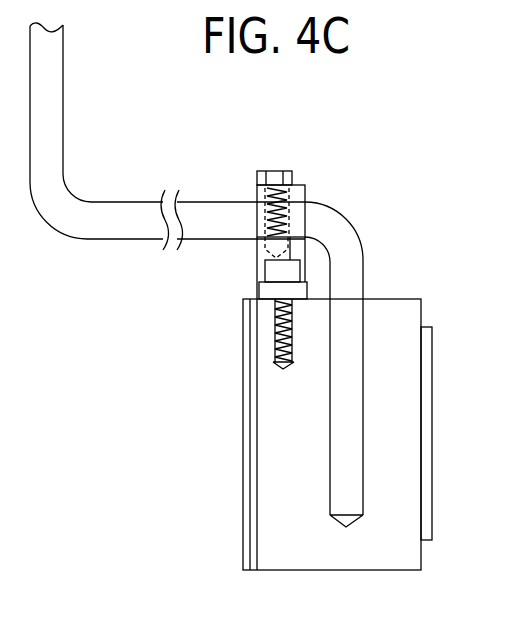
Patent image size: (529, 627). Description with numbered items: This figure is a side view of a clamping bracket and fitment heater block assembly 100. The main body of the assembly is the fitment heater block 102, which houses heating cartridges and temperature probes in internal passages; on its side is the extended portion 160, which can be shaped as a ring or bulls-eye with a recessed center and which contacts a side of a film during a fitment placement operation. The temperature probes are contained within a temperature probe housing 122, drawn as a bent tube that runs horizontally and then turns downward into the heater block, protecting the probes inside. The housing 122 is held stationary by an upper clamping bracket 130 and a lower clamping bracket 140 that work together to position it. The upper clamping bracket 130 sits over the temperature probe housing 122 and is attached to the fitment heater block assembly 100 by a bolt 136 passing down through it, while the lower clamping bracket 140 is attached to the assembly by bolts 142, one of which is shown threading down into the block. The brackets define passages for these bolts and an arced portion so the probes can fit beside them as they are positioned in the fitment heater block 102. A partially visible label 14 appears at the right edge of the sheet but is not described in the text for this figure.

The fitment heater block assembly 100 is at (118, 371).
The fitment heater block 102 is at (384, 322).
The temperature probe housing 122 is at (127, 211).
The upper clamping bracket 130 is at (298, 190).
The bolt 136 is at (275, 172).
The lower clamping bracket 140 is at (265, 291).
The bolts 142 is at (273, 270).
The extended portion 160 is at (425, 497).
The conduit 14 is at (521, 262).